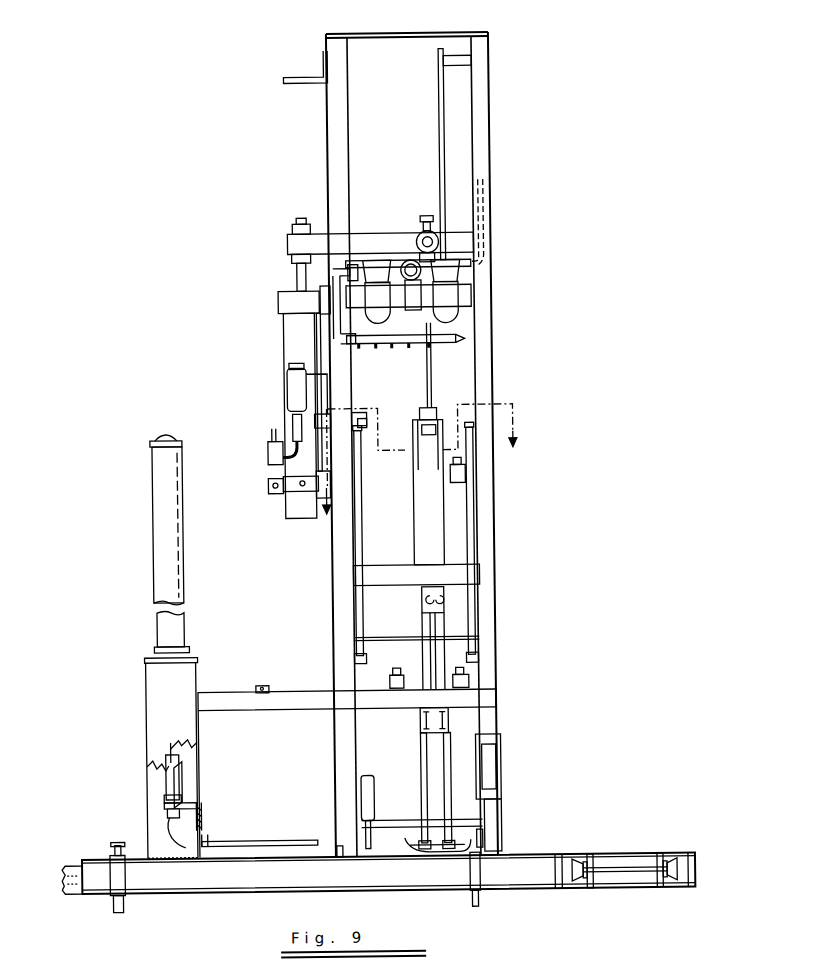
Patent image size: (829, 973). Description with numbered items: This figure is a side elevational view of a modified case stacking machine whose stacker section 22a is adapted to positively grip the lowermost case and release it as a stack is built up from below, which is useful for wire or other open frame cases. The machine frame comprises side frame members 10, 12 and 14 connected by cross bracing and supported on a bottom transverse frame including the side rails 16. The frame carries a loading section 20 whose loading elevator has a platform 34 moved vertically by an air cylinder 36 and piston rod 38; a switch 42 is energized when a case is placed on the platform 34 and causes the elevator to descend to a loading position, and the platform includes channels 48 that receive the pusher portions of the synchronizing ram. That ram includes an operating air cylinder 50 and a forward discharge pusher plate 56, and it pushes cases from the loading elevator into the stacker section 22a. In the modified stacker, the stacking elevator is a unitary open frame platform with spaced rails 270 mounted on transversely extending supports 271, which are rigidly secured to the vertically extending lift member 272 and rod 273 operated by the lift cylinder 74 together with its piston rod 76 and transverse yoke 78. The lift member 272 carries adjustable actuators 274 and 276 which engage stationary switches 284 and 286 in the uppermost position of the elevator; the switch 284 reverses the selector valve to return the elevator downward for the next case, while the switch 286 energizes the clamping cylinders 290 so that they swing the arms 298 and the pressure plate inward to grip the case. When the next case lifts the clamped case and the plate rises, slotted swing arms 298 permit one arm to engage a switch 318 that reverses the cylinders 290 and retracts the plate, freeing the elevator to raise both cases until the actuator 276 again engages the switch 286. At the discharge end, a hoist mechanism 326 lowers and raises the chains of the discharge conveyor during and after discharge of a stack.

The side frame member 10 is at (124, 772).
The side frame member 12 is at (330, 125).
The side frame member 14 is at (491, 130).
The side rail 16 is at (218, 884).
The loading section 20 is at (136, 802).
The modified stacker section 22a is at (500, 301).
The platform 34 is at (273, 840).
The air cylinder 36 is at (163, 507).
The piston rod 38 is at (172, 772).
The switch 42 is at (260, 685).
The channel 48 is at (223, 841).
The operating air cylinder 50 is at (72, 892).
The discharge pusher plate 56 is at (330, 846).
The air cylinder 74 is at (290, 335).
The piston rod 76 is at (305, 217).
The transverse yoke 78 is at (378, 240).
The rail 270 is at (388, 828).
The transversely extending support 271 is at (414, 846).
The lift member 272 is at (441, 487).
The rod 273 is at (432, 387).
The adjustable actuator 274 is at (445, 722).
The adjustable actuator 276 is at (420, 722).
The switch 284 is at (441, 611).
The switch 286 is at (422, 605).
The clamping cylinder 290 is at (453, 670).
The swing arm 298 is at (470, 527).
The switch 318 is at (358, 412).
The hoist mechanism 326 is at (584, 852).